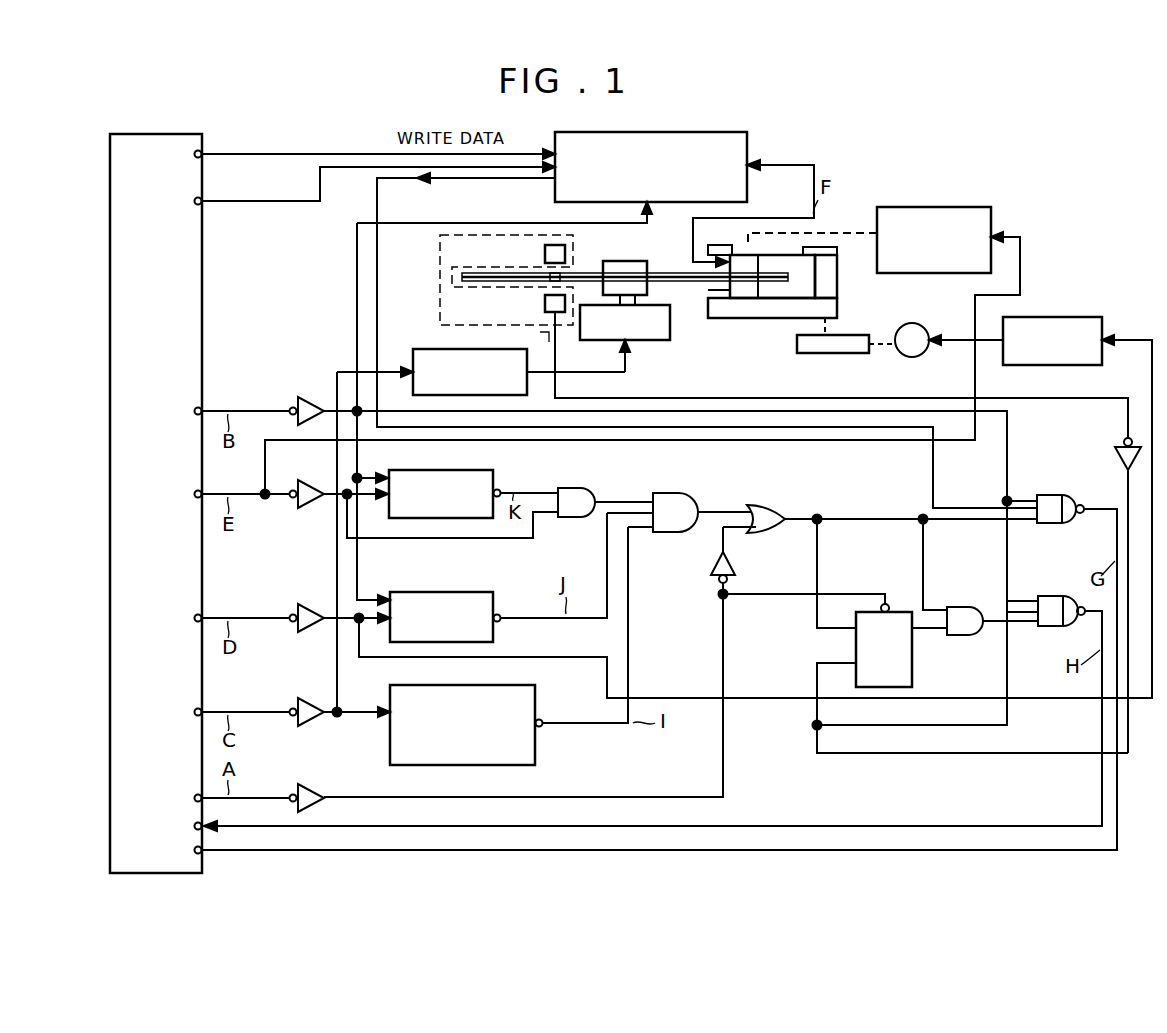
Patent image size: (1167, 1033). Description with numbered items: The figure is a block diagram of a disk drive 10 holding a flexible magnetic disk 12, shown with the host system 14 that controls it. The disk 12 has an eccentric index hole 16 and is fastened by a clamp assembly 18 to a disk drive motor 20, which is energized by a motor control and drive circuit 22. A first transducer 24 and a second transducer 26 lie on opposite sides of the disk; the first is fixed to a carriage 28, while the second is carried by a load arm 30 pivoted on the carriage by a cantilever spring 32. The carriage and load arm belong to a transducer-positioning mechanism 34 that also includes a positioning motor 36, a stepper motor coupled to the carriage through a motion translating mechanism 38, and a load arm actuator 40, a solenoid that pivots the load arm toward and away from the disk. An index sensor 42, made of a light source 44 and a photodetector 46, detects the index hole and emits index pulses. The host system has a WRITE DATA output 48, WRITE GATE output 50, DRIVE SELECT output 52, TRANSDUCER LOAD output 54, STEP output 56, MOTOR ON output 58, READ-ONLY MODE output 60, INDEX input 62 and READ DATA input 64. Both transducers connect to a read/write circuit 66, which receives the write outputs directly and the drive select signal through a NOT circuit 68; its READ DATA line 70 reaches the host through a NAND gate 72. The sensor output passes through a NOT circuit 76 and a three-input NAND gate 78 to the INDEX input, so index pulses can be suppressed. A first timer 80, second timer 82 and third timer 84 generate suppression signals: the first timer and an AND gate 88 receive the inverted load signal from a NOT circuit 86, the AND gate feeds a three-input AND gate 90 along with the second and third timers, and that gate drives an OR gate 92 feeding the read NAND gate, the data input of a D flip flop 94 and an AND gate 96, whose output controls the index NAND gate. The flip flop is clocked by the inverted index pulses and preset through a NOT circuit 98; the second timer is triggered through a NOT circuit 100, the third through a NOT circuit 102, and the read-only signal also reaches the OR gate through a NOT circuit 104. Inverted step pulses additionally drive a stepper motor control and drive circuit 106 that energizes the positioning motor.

The disk drive 10 is at (998, 145).
The flexible magnetic disk 12 is at (668, 271).
The host system 14 is at (203, 313).
The index hole 16 is at (563, 271).
The clamp assembly 18 is at (627, 261).
The disk drive motor 20 is at (652, 343).
The motor control and drive circuit 22 is at (410, 368).
The first transducer 24 is at (718, 289).
The second transducer 26 is at (737, 262).
The carriage 28 is at (745, 320).
The load arm 30 is at (812, 250).
The cantilever spring 32 is at (844, 268).
The transducer-positioning mechanism 34 is at (843, 361).
The positioning motor 36 is at (918, 318).
The motion translating mechanism 38 is at (853, 333).
The load arm actuator 40 is at (993, 212).
The index sensor 42 is at (433, 243).
The light source 44 is at (542, 254).
The photodetector 46 is at (542, 304).
The WRITE DATA output 48 is at (206, 153).
The WRITE GATE output 50 is at (206, 200).
The DRIVE SELECT output 52 is at (205, 408).
The TRANSDUCER LOAD output 54 is at (205, 491).
The STEP output 56 is at (205, 615).
The MOTOR ON output 58 is at (205, 709).
The READ-ONLY MODE output 60 is at (206, 802).
The INDEX input 62 is at (206, 830).
The READ DATA input 64 is at (206, 854).
The read/write circuit 66 is at (748, 140).
The NOT circuit 68 is at (311, 399).
The READ DATA line 70 is at (500, 180).
The NAND gate 72 is at (1050, 493).
The NOT circuit 76 is at (1114, 470).
The three-input NAND gate 78 is at (1058, 597).
The first timer 80 is at (494, 474).
The second timer 82 is at (478, 592).
The third timer 84 is at (537, 711).
The NOT circuit 86 is at (311, 509).
The AND gate 88 is at (587, 488).
The three-input AND gate 90 is at (674, 490).
The OR gate 92 is at (758, 500).
The D flip flop 94 is at (914, 672).
The AND gate 96 is at (961, 607).
The NOT circuit 98 is at (317, 788).
The NOT circuit 100 is at (310, 607).
The NOT circuit 102 is at (310, 701).
The NOT circuit 104 is at (712, 570).
The stepper motor control and drive circuit 106 is at (1052, 315).